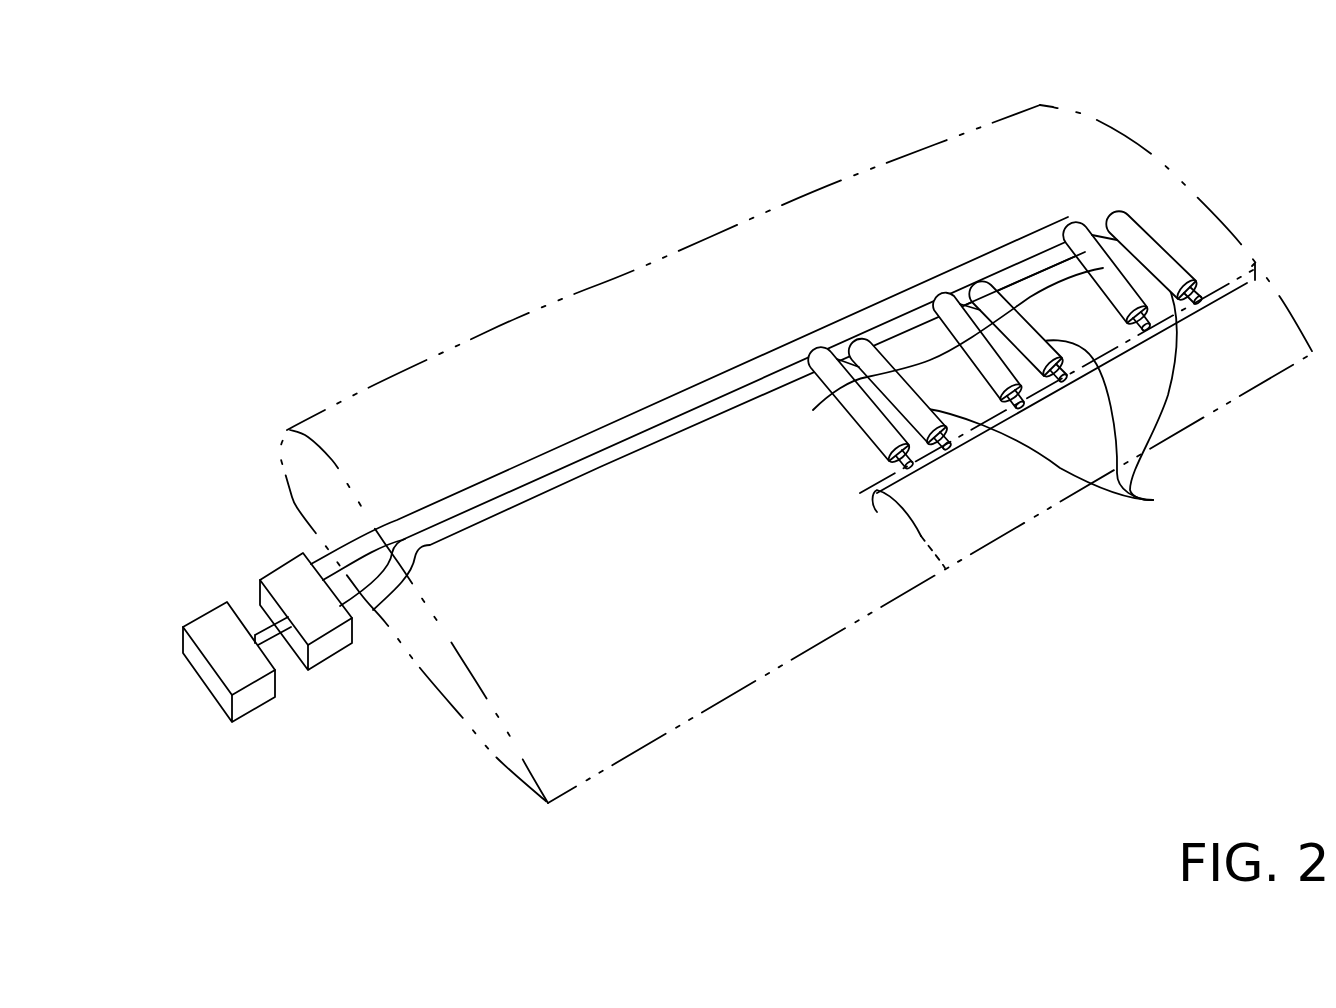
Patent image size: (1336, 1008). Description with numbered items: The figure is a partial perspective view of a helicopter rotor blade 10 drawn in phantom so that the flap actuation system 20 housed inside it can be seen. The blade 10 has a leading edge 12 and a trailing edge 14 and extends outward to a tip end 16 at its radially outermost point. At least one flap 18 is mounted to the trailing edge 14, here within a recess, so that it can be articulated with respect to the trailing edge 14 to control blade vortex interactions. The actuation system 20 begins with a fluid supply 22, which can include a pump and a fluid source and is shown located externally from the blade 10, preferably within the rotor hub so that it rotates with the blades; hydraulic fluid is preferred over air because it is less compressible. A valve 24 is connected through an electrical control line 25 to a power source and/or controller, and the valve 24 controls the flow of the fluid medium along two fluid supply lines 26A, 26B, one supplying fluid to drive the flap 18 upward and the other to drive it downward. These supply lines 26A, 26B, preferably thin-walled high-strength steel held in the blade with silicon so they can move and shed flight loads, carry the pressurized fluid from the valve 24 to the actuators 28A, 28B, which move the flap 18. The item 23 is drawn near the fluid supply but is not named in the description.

The rotor blade 10 is at (833, 142).
The leading edge 12 is at (733, 224).
The trailing edge 14 is at (787, 595).
The tip end 16 is at (1150, 152).
The flap 18 is at (1227, 363).
The actuation system 20 is at (521, 434).
The fluid supply 22 is at (218, 623).
The drive unit base 23 is at (276, 760).
The valve 24 is at (300, 583).
The electrical control line 25 is at (354, 708).
The fluid supply line 26A is at (647, 420).
The fluid supply line 26B is at (535, 490).
The actuator 28A is at (852, 397).
The actuator 28B is at (1153, 500).